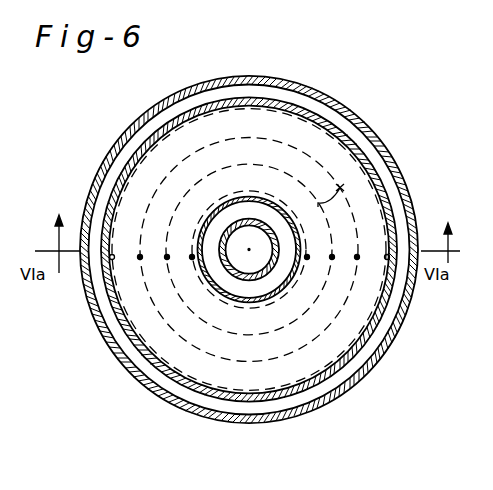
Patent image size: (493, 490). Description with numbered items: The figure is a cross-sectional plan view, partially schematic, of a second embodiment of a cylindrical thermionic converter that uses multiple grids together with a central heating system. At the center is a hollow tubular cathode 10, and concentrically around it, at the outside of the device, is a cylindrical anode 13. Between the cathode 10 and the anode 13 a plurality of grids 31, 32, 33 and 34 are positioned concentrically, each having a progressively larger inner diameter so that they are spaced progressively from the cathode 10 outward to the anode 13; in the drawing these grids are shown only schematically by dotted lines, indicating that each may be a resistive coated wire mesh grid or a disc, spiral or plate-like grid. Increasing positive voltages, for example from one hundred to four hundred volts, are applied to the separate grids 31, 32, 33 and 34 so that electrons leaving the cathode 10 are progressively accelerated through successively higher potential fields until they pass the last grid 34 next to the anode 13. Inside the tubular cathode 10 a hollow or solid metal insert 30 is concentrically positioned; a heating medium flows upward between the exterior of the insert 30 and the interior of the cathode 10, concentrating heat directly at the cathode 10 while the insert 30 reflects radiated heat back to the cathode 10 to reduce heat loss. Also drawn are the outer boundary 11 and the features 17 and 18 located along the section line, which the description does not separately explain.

The hollow tubular cathode 10 is at (250, 197).
The outer casing 11 is at (380, 147).
The cylindrical anode 13 is at (106, 194).
The nozzle openings 17 is at (307, 258).
The nozzle openings 18 is at (112, 259).
The metal insert 30 is at (270, 230).
The grid 31 is at (304, 236).
The grid 32 is at (340, 187).
The grid 33 is at (298, 150).
The grid 34 is at (332, 130).